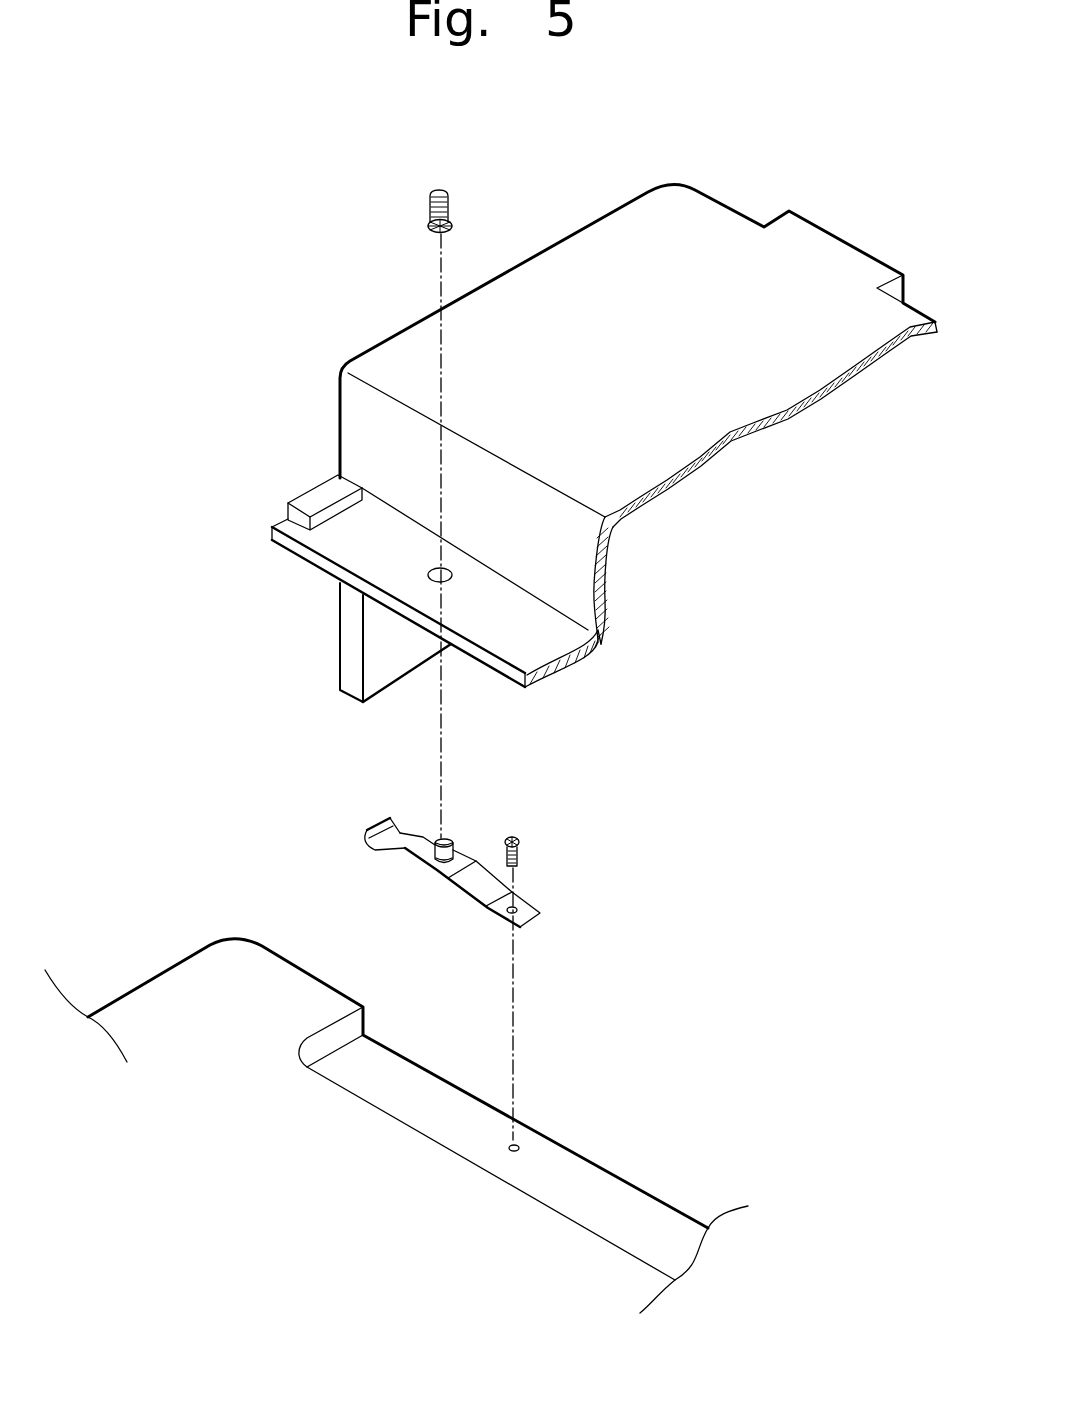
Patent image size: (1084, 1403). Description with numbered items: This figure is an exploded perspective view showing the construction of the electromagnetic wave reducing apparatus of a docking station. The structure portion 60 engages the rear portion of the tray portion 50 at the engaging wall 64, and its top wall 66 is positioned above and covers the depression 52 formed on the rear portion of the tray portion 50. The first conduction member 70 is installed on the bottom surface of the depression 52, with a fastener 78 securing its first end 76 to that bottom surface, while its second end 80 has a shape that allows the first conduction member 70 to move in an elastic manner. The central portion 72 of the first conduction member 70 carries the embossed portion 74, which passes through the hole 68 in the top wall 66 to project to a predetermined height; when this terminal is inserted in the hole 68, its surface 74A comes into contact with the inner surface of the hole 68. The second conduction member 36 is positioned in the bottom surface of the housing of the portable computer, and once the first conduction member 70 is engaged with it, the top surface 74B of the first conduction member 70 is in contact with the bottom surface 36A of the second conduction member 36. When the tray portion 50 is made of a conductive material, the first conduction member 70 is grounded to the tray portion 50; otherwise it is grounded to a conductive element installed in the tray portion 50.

The second conduction member 36 is at (452, 198).
The bottom surface of second conduction member 36A is at (427, 232).
The tray portion 50 is at (137, 1003).
The depression 52 is at (603, 1180).
The structure portion 60 is at (402, 350).
The engaging wall 64 is at (352, 664).
The top wall 66 is at (272, 540).
The hole 68 is at (452, 573).
The first conduction member 70 is at (451, 849).
The central portion 72 is at (465, 866).
The embossed portion 74 is at (441, 838).
The surface of terminal 74A is at (432, 862).
The top surface of first conduction member 74B is at (448, 838).
The first end 76 is at (530, 912).
The fastener 78 is at (522, 852).
The second end 80 is at (367, 838).